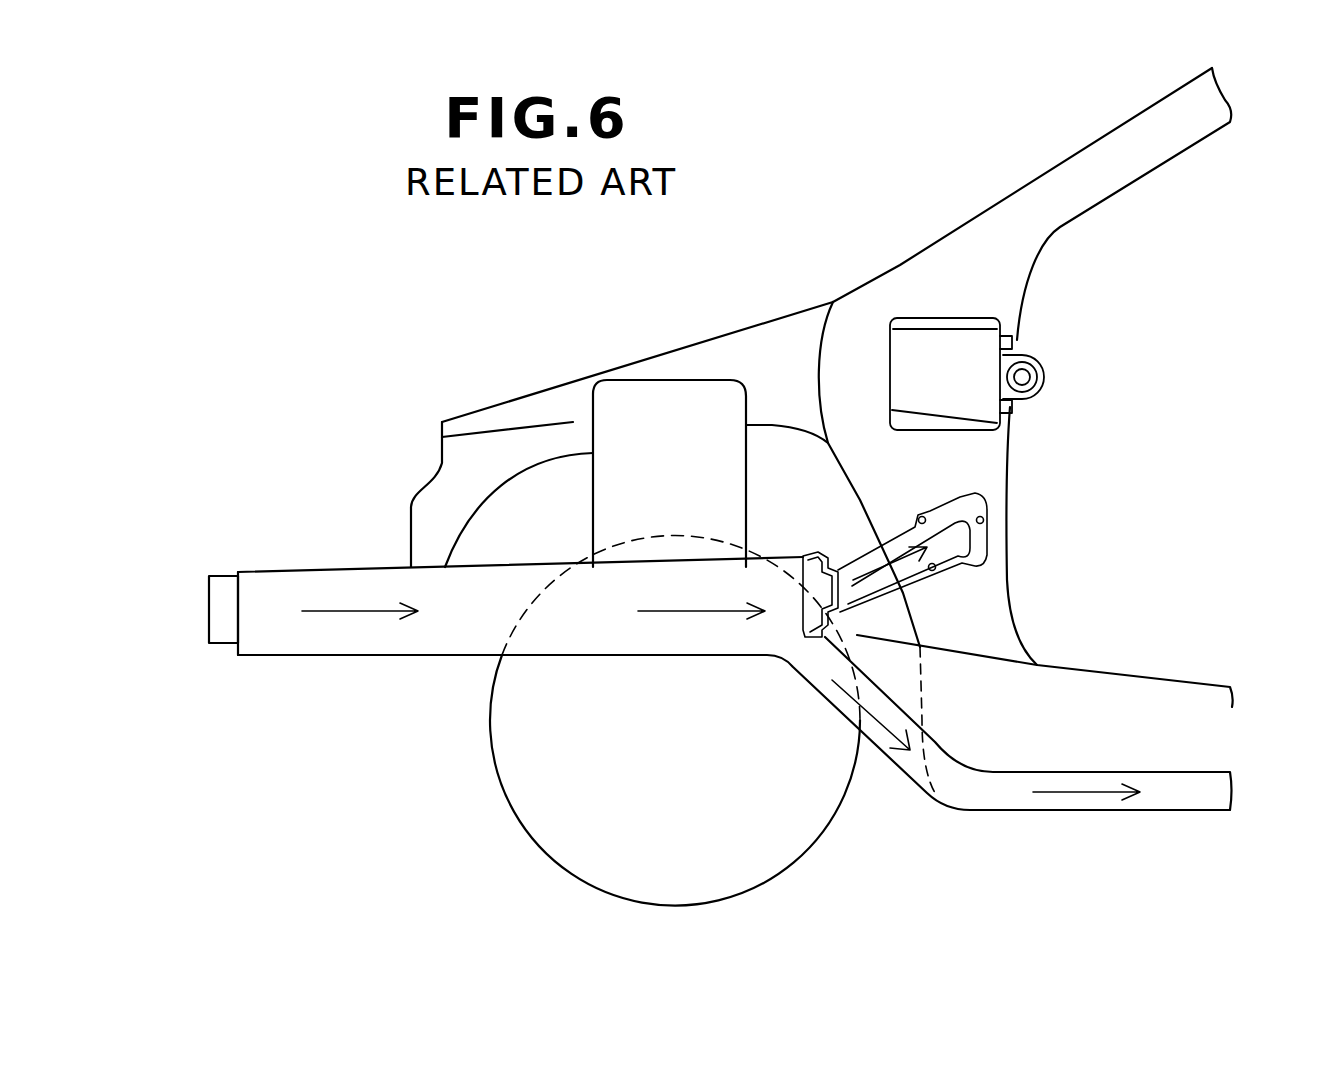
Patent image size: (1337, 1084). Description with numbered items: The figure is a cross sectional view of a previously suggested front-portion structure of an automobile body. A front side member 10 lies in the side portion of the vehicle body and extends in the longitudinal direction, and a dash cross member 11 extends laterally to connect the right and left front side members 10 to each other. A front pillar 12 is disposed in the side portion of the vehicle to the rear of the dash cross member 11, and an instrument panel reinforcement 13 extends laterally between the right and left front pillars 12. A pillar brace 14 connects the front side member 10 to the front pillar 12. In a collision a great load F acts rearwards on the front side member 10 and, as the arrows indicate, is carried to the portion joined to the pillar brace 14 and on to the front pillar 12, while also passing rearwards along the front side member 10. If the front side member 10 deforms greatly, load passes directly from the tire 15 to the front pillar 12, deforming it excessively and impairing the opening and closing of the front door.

The front side member 10 is at (400, 642).
The dash cross member 11 is at (803, 556).
The front pillar 12 is at (985, 240).
The instrument panel reinforcement 13 is at (1045, 362).
The pillar brace 14 is at (948, 558).
The tire 15 is at (487, 737).
The load F is at (340, 608).